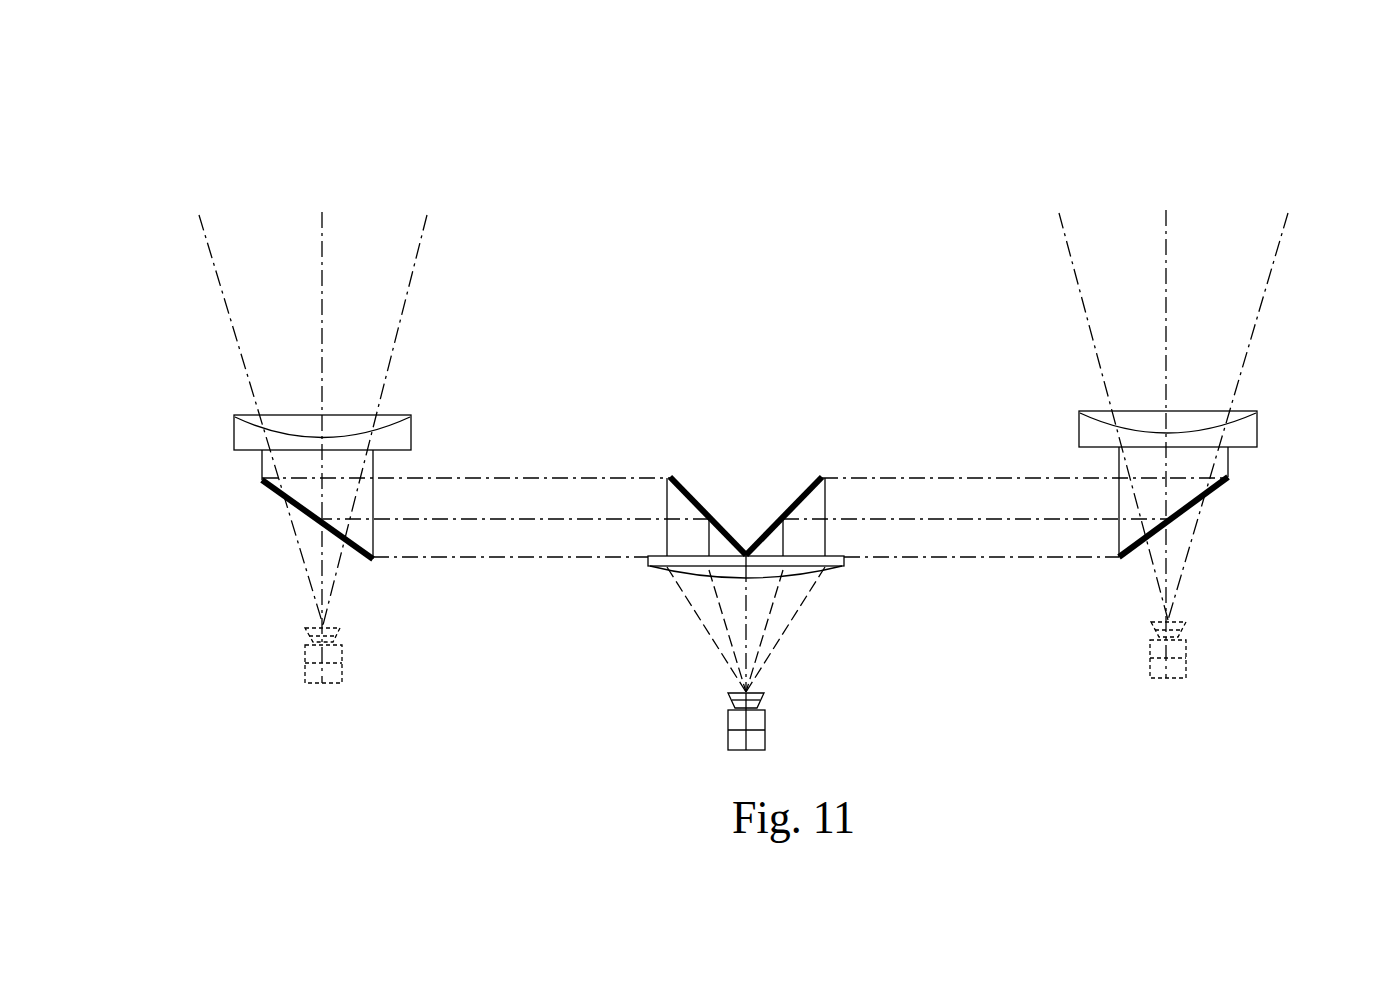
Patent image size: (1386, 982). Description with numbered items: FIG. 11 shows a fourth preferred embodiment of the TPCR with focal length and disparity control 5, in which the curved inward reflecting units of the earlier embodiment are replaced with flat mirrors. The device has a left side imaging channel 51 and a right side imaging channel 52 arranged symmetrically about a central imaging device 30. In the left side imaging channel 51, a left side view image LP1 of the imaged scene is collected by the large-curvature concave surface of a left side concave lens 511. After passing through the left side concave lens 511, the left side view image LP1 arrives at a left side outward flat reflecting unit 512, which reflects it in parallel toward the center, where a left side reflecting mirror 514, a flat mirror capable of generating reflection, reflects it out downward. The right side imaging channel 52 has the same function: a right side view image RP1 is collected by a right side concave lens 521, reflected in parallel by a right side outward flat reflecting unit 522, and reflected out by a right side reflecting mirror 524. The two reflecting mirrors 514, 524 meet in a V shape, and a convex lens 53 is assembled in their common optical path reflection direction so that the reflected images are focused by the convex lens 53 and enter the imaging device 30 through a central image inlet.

The TPCR with focal length and disparity control 5 is at (1316, 288).
The imaging device 30 is at (755, 740).
The left side imaging channel 51 is at (458, 510).
The left side concave lens 511 is at (240, 425).
The left side outward flat reflecting unit 512 is at (347, 567).
The left side reflecting mirror 514 is at (680, 484).
The right side imaging channel 52 is at (975, 512).
The right side concave lens 521 is at (1240, 430).
The right side outward flat reflecting unit 522 is at (1148, 562).
The right side reflecting mirror 524 is at (797, 490).
The convex lens 53 is at (660, 568).
The left side view image LP1 is at (322, 257).
The right side view image RP1 is at (1165, 272).